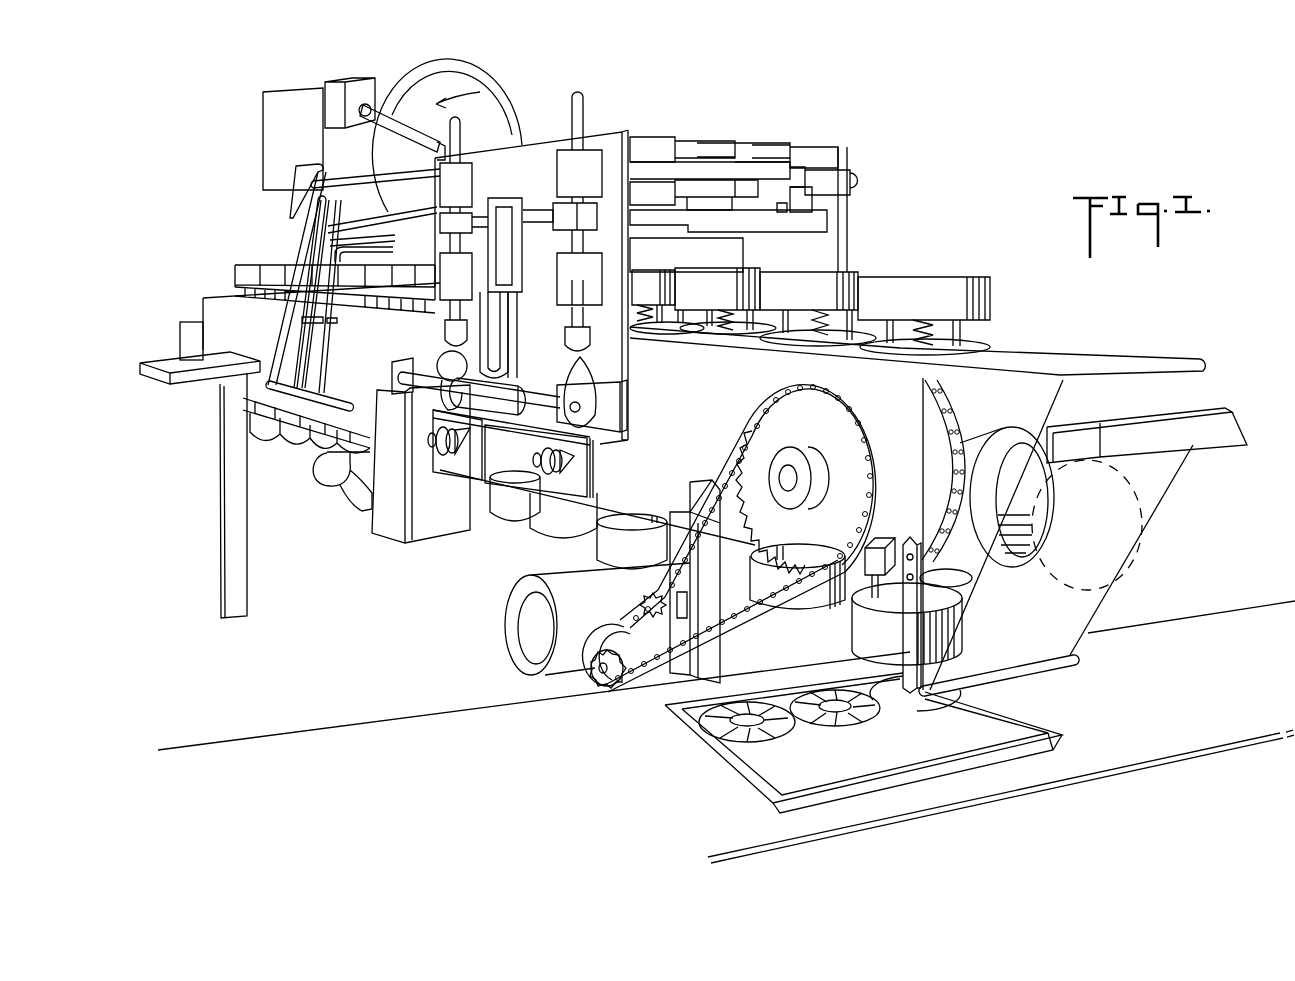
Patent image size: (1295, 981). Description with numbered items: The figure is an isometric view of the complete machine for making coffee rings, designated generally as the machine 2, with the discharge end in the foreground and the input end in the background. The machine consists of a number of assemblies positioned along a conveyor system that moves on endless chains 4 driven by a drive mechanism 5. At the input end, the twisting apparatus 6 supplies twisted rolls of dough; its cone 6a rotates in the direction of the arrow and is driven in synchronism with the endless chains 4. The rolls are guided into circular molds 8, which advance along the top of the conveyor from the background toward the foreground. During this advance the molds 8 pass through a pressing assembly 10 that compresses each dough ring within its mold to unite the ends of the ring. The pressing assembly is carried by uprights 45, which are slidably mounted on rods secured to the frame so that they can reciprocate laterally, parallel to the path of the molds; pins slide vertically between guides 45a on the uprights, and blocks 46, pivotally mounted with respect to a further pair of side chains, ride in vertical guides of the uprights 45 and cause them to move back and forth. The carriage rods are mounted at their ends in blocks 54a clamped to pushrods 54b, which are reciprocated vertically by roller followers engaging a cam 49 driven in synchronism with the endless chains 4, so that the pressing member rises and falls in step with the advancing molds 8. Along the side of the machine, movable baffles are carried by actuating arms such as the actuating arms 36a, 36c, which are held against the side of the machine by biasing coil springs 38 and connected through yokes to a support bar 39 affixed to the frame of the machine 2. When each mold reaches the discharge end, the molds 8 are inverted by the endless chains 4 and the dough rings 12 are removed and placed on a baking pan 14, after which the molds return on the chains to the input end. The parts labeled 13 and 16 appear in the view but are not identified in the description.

The machine for making coffee rings 2 is at (864, 106).
The endless chains 4 is at (953, 413).
The drive mechanism 5 is at (655, 678).
The twisting apparatus 6 is at (505, 66).
The cone 6a is at (520, 108).
The circular molds 8 is at (240, 265).
The pressing assembly 10 is at (630, 133).
The dough rings 12 is at (915, 715).
The bracket 13 is at (932, 497).
The baking pan 14 is at (1055, 732).
The control box 16 is at (270, 92).
The actuating arm 36a is at (286, 344).
The actuating arm 36c is at (325, 352).
The biasing coil springs 38 is at (337, 320).
The support bar 39 is at (342, 400).
The uprights 45 is at (540, 371).
The guides 45a is at (515, 200).
The blocks 46 is at (522, 296).
The cam 49 is at (440, 360).
The blocks 54a is at (583, 220).
The pushrods 54b is at (590, 100).